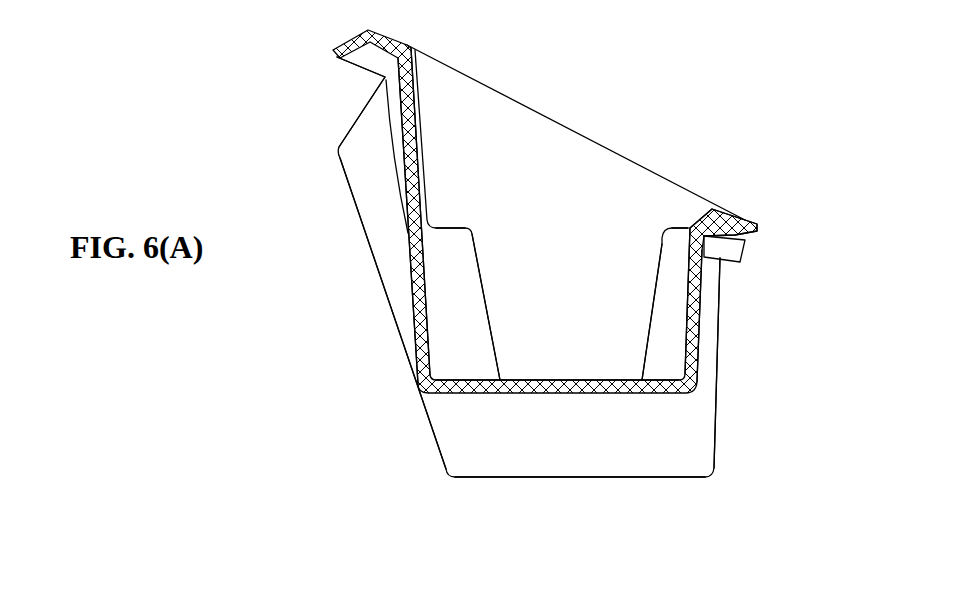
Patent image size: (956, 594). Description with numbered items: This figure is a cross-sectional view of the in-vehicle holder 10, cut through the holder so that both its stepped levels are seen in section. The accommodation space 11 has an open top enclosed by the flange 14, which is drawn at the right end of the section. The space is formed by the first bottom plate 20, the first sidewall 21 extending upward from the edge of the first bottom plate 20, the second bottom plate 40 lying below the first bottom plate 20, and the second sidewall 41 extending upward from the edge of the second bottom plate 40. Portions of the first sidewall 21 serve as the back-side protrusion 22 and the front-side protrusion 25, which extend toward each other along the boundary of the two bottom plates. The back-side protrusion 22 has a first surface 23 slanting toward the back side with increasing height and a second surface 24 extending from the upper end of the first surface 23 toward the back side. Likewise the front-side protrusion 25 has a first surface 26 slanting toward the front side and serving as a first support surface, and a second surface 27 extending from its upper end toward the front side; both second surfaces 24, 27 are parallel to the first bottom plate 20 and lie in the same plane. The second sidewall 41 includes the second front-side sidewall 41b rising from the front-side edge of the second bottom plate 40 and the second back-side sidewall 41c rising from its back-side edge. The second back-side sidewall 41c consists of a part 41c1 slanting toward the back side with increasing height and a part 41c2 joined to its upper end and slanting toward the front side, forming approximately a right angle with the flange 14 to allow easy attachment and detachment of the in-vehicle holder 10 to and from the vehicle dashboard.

The in-vehicle holder 10 is at (777, 45).
The accommodation space 11 is at (563, 210).
The flange 14 is at (730, 211).
The first bottom plate 20 is at (552, 380).
The first sidewall 21 is at (425, 318).
The back-side protrusion 22 is at (481, 247).
The first surface 23 is at (481, 277).
The second surface 24 is at (450, 227).
The front-side protrusion 25 is at (658, 248).
The first surface 26 is at (660, 272).
The second surface 27 is at (685, 226).
The second bottom plate 40 is at (633, 477).
The second sidewall 41 is at (395, 321).
The second front-side sidewall 41b is at (720, 350).
The second back-side sidewall 41c is at (334, 263).
The part slanting toward the back side 41c1 is at (393, 313).
The part slanting toward the front side 41c2 is at (361, 112).